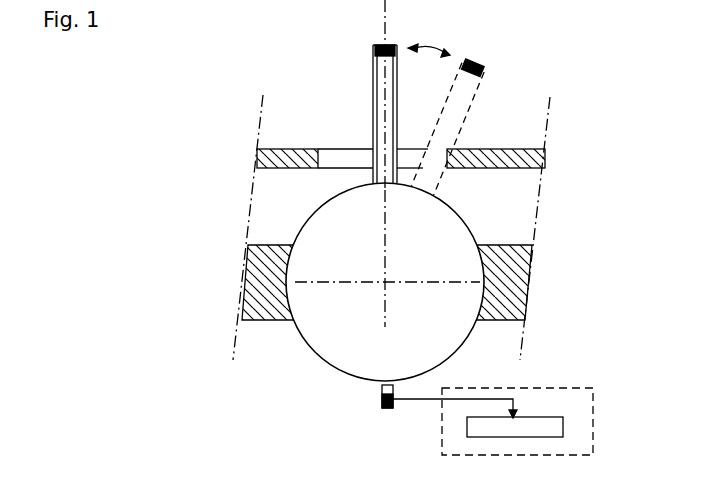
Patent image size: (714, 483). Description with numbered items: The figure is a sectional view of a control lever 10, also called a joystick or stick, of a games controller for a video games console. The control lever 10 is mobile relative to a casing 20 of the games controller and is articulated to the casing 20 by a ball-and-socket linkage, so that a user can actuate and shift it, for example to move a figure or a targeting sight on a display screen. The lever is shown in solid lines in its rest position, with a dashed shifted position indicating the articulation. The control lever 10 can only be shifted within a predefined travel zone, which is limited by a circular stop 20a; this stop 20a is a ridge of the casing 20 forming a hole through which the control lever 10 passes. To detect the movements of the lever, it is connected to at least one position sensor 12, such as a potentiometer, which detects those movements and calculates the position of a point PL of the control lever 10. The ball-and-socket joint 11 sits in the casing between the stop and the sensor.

The control lever 10 is at (376, 118).
The ball joint 11 is at (318, 282).
The position sensor 12 is at (521, 392).
The casing 20 is at (325, 229).
The circular stop 20a is at (308, 119).
The point of the control lever PL is at (326, 95).